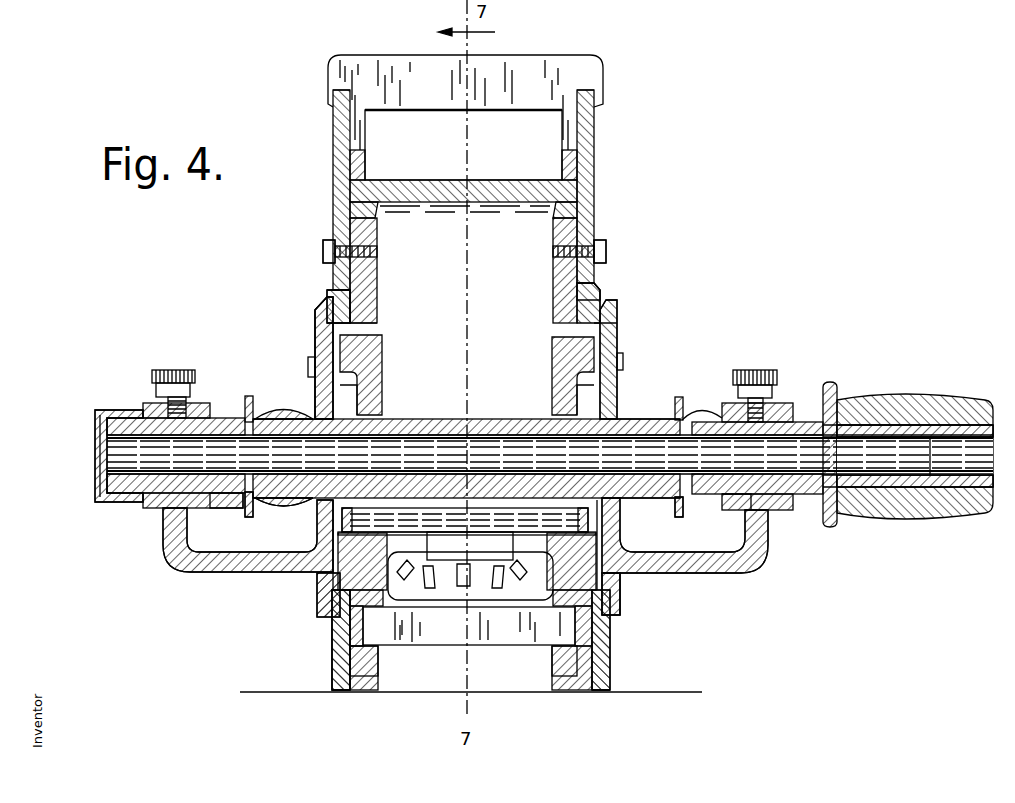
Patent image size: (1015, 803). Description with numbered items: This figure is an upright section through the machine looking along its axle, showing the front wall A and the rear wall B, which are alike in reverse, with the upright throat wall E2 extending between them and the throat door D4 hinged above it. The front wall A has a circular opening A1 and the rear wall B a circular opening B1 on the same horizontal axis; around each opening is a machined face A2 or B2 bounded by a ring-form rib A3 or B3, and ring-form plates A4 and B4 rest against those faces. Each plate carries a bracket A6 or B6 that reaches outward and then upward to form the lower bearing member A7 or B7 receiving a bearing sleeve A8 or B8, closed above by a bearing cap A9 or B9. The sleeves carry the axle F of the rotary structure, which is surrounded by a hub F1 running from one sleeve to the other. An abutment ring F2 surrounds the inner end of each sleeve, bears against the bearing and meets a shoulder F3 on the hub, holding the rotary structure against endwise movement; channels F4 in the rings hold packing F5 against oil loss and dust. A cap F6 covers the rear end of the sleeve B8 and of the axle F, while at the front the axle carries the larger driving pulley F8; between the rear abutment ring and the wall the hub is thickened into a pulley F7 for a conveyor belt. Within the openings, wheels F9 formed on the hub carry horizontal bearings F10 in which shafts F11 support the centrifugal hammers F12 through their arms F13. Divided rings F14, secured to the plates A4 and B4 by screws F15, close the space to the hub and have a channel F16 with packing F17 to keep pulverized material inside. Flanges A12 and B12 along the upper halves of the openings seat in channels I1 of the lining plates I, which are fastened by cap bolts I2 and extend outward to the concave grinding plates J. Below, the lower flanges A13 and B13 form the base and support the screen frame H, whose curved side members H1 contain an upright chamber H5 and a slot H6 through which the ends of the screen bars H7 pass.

The upright throat wall E2 is at (556, 76).
The front wall A is at (596, 147).
The throat door D4 is at (463, 145).
The concave grinding plate J is at (415, 183).
The channel I1 is at (370, 290).
The lining plate I is at (322, 238).
The cap bolts I2 is at (322, 252).
The flange A12 is at (598, 278).
The ring-form rib A3 is at (604, 300).
The machined face A2 is at (622, 305).
The ring-form plate A4 is at (627, 323).
The circular opening A1 is at (606, 320).
The rear wall B is at (337, 219).
The ring-form rib B3 is at (322, 290).
The machined face B2 is at (318, 322).
The flange B12 is at (378, 315).
The ring-form plate B4 is at (322, 328).
The wheels F9 is at (372, 352).
The divided ring F14 is at (360, 396).
The bolts or screws F15 is at (624, 368).
The channel F16 is at (311, 368).
The hub F1 is at (506, 418).
The packing F17 is at (313, 417).
The shoulder F3 is at (282, 410).
The pulley F7 is at (280, 507).
The axle F is at (863, 447).
The lower bearing member B7 is at (160, 508).
The bearing sleeve B8 is at (97, 488).
The cap F6 is at (100, 425).
The bearing cap B9 is at (158, 402).
The abutment ring F2 is at (236, 410).
The channels F4 is at (223, 503).
The packing F5 is at (250, 505).
The lower bearing half A7 is at (783, 512).
The bearing cap A9 is at (808, 420).
The bearing sleeve A8 is at (826, 402).
The larger pulley F8 is at (883, 521).
The bracket B6 is at (182, 567).
The circular opening B1 is at (315, 592).
The bracket A6 is at (760, 565).
The screen frame H is at (471, 640).
The chamber H5 is at (338, 622).
The screen bars H7 is at (340, 648).
The curved side members H1 is at (333, 672).
The slot H6 is at (380, 650).
The flange B13 is at (352, 693).
The inward-directed flange A13 is at (598, 697).
The horizontal bearings F10 is at (433, 524).
The shafts F11 is at (487, 523).
The hammers F12 is at (473, 565).
The arms F13 is at (433, 537).